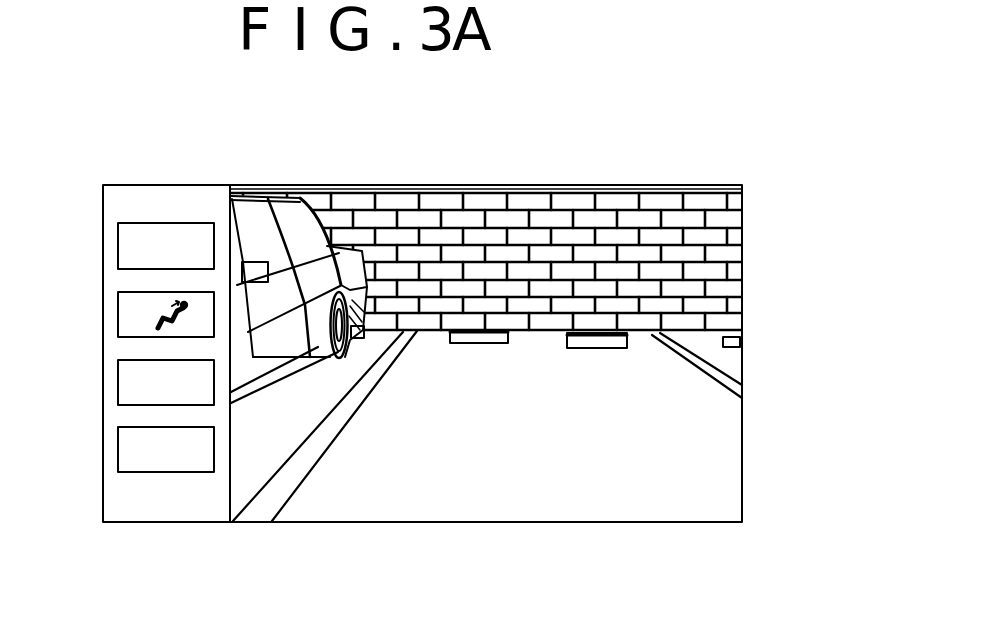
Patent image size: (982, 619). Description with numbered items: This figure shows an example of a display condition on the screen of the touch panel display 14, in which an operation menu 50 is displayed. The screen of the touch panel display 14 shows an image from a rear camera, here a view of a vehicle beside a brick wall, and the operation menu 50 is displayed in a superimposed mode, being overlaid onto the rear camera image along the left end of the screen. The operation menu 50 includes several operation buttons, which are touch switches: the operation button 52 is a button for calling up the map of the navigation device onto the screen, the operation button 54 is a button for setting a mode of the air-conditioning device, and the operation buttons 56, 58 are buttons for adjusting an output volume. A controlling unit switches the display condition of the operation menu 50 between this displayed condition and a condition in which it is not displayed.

The touch panel display 14 is at (676, 169).
The operation menu 50 is at (165, 186).
The operation button 52 is at (118, 246).
The operation button 54 is at (118, 314).
The operation button 56 is at (118, 383).
The operation button 58 is at (118, 452).